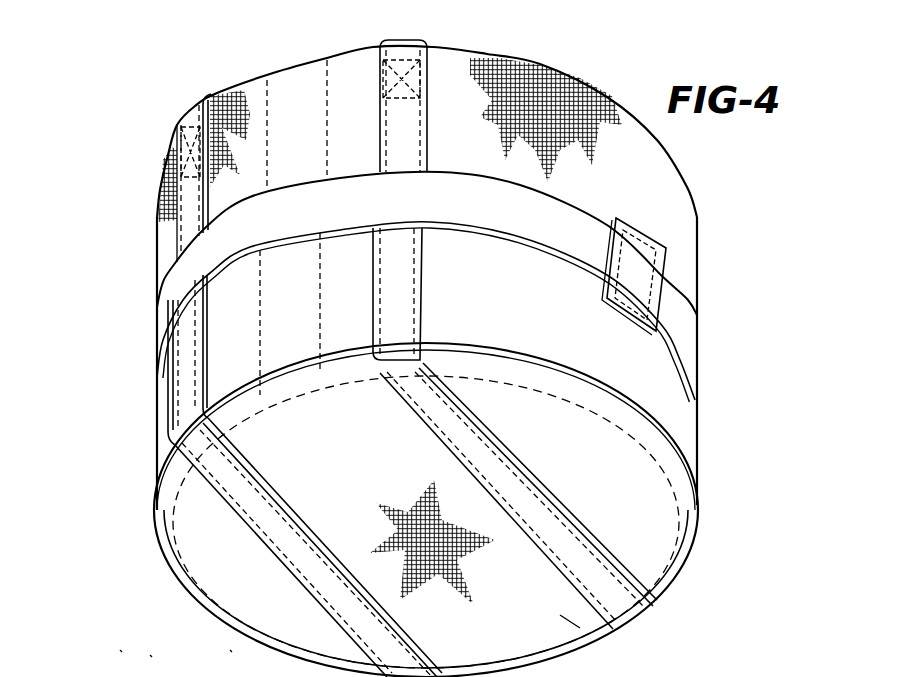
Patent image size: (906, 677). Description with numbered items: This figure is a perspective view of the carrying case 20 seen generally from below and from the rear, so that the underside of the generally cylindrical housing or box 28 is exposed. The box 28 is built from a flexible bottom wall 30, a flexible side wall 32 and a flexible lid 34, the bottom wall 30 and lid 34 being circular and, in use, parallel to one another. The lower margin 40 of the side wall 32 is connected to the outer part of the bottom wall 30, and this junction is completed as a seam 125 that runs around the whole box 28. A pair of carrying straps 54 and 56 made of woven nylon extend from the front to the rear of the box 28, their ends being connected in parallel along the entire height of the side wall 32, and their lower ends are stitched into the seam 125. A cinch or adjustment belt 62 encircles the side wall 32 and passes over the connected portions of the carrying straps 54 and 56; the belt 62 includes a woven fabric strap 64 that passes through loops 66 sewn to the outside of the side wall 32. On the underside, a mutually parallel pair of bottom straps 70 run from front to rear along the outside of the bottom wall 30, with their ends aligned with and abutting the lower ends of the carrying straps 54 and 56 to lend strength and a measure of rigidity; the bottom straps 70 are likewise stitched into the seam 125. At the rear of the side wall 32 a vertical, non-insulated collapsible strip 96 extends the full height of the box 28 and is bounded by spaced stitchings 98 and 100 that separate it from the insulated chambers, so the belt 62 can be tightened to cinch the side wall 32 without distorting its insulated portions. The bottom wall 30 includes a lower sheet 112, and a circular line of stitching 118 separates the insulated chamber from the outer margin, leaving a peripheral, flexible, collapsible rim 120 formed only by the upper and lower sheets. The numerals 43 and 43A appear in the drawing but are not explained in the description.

The carrying case 20 is at (153, 242).
The housing or box 28 is at (701, 212).
The bottom wall 30 is at (655, 517).
The side wall 32 is at (227, 356).
The lid 34 is at (116, 663).
The lower margin 40 is at (680, 440).
The rim edge 43 is at (156, 666).
The rim edge portion 43A is at (233, 663).
The carrying strap 54 is at (162, 216).
The carrying strap 56 is at (427, 146).
The cinch or adjustment belt 62 is at (155, 307).
The strap 64 is at (565, 256).
The loops 66 is at (640, 247).
The bottom straps 70 is at (458, 440).
The collapsible strip 96 is at (289, 334).
The stitching 98 is at (262, 320).
The stitching 100 is at (318, 296).
The lower sheet 112 is at (570, 620).
The circular line of stitching 118 is at (175, 510).
The collapsible strip or rim 120 is at (178, 552).
The seam 125 is at (185, 436).